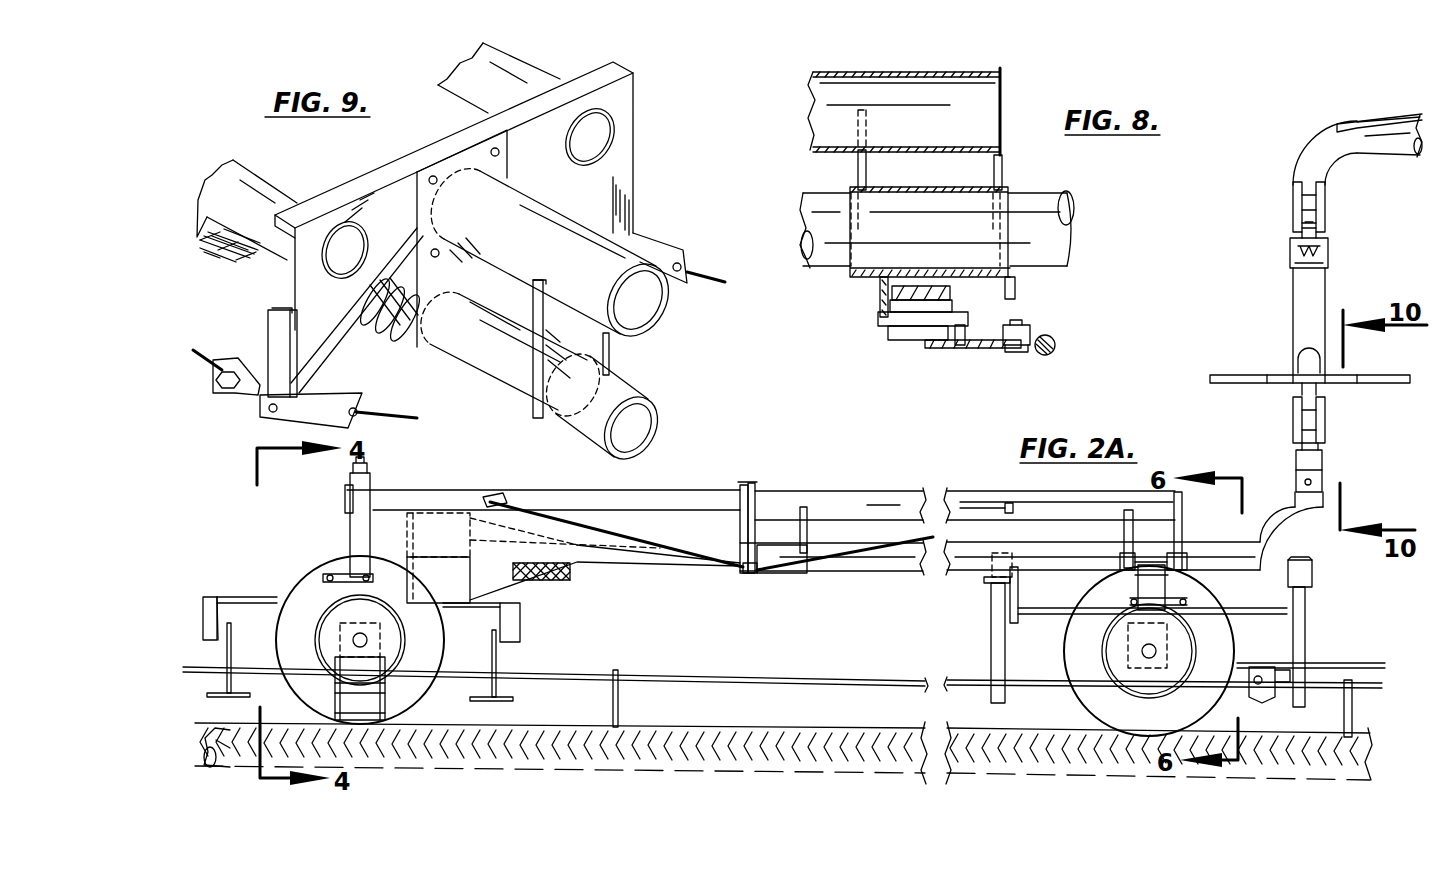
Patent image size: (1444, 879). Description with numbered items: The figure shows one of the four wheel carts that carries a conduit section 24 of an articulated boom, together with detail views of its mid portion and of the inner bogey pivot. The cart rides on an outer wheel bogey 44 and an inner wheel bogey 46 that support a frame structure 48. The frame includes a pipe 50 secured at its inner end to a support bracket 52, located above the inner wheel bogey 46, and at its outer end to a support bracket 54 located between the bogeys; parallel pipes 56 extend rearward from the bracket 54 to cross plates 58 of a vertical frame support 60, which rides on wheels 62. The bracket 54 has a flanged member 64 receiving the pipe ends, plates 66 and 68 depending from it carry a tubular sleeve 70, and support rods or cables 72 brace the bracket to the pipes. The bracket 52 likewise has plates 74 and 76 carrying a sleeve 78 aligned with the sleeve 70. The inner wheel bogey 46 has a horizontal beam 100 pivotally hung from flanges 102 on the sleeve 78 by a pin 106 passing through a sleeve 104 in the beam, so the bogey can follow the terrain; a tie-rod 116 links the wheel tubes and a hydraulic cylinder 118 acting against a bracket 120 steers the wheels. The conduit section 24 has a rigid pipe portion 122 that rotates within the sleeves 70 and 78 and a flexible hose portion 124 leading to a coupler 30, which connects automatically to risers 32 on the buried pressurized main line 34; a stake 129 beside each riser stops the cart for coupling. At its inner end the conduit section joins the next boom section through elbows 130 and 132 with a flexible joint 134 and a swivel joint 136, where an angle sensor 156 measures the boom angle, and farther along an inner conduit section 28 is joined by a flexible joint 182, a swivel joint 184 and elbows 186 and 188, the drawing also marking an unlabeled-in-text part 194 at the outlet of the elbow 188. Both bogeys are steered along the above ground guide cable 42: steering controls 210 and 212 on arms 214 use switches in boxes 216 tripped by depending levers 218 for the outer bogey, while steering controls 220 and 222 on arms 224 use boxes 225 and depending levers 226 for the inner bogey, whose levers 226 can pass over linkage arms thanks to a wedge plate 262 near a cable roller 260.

In FIG. 2A, the conduit section 24 is at (822, 583).
In FIG. 2A, the inner conduit section 28 is at (1387, 152).
In FIG. 2A, the coupler 30 is at (300, 673).
In FIG. 2A, the riser 32 is at (425, 679).
In FIG. 2A, the pressurized main line 34 is at (210, 762).
In FIG. 2A, the above ground guide cable 42 is at (645, 676).
In FIG. 2A, the outer wheel bogey 44 is at (292, 583).
In FIG. 2A, the inner wheel bogey 46 is at (1245, 648).
In FIG. 2A, the frame structure 48 is at (696, 482).
In FIG. 9, the pipe 50 is at (660, 312).
In FIG. 8, the pipe 50 is at (855, 70).
In FIG. 2A, the pipe 50 is at (925, 490).
In FIG. 2A, the support bracket 52 is at (1192, 517).
In FIG. 9, the support bracket 54 is at (650, 117).
In FIG. 2A, the support bracket 54 is at (756, 472).
In FIG. 9, the pipes 56 is at (453, 68).
In FIG. 2A, the pipes 56 is at (540, 490).
In FIG. 2A, the cross plates 58 is at (345, 497).
In FIG. 2A, the vertical frame support 60 is at (343, 528).
In FIG. 2A, the wheels 62 is at (277, 631).
In FIG. 9, the flanged member 64 is at (295, 289).
In FIG. 2A, the flanged member 64 is at (740, 516).
In FIG. 9, the plate 66 is at (419, 352).
In FIG. 2A, the plate 66 is at (740, 576).
In FIG. 9, the plate 68 is at (603, 353).
In FIG. 2A, the plate 68 is at (806, 515).
In FIG. 9, the tubular sleeve 70 is at (502, 396).
In FIG. 2A, the tubular sleeve 70 is at (772, 545).
In FIG. 9, the support rods or cables 72 is at (210, 352).
In FIG. 2A, the support rods or cables 72 is at (660, 572).
In FIG. 8, the plate 74 is at (1002, 169).
In FIG. 2A, the plate 74 is at (1180, 556).
In FIG. 8, the plate 76 is at (858, 166).
In FIG. 2A, the plate 76 is at (1128, 510).
In FIG. 8, the sleeve 78 is at (1002, 278).
In FIG. 2A, the sleeve 78 is at (1185, 566).
In FIG. 8, the beam 100 is at (898, 346).
In FIG. 8, the flanges 102 is at (880, 294).
In FIG. 8, the sleeve 104 is at (916, 352).
In FIG. 8, the pin 106 is at (878, 322).
In FIG. 8, the tie-rod 116 is at (1056, 346).
In FIG. 8, the hydraulic cylinder 118 is at (1026, 330).
In FIG. 8, the bracket 120 is at (996, 349).
In FIG. 9, the rigid pipe portion 122 is at (655, 401).
In FIG. 8, the rigid pipe portion 122 is at (1060, 250).
In FIG. 2A, the rigid pipe portion 122 is at (914, 574).
In FIG. 9, the flexible hose portion 124 is at (216, 254).
In FIG. 2A, the flexible hose portion 124 is at (578, 582).
In FIG. 2A, the stake 129 is at (1353, 713).
In FIG. 2A, the elbow 130 is at (1305, 541).
In FIG. 2A, the elbow 132 is at (1298, 361).
In FIG. 2A, the flexible joint 134 is at (1333, 468).
In FIG. 2A, the swivel joint 136 is at (1335, 420).
In FIG. 2A, the angle sensor 156 is at (1260, 395).
In FIG. 2A, the flexible joint 182 is at (1283, 258).
In FIG. 2A, the swivel joint 184 is at (1286, 206).
In FIG. 2A, the elbow 186 is at (1322, 225).
In FIG. 2A, the elbow 188 is at (1308, 155).
In FIG. 2A, the flange 194 is at (1385, 114).
In FIG. 2A, the steering control 210 is at (206, 597).
In FIG. 2A, the steering control 212 is at (530, 626).
In FIG. 2A, the arms 214 is at (247, 597).
In FIG. 2A, the boxes 216 is at (214, 597).
In FIG. 2A, the depending levers 218 is at (218, 696).
In FIG. 2A, the steering control 220 is at (982, 582).
In FIG. 2A, the steering control 222 is at (1325, 572).
In FIG. 2A, the arms 224 is at (1027, 616).
In FIG. 2A, the boxes 225 is at (1013, 578).
In FIG. 2A, the depending levers 226 is at (991, 661).
In FIG. 2A, the roller 260 is at (1265, 702).
In FIG. 2A, the wedge plate 262 is at (1203, 690).